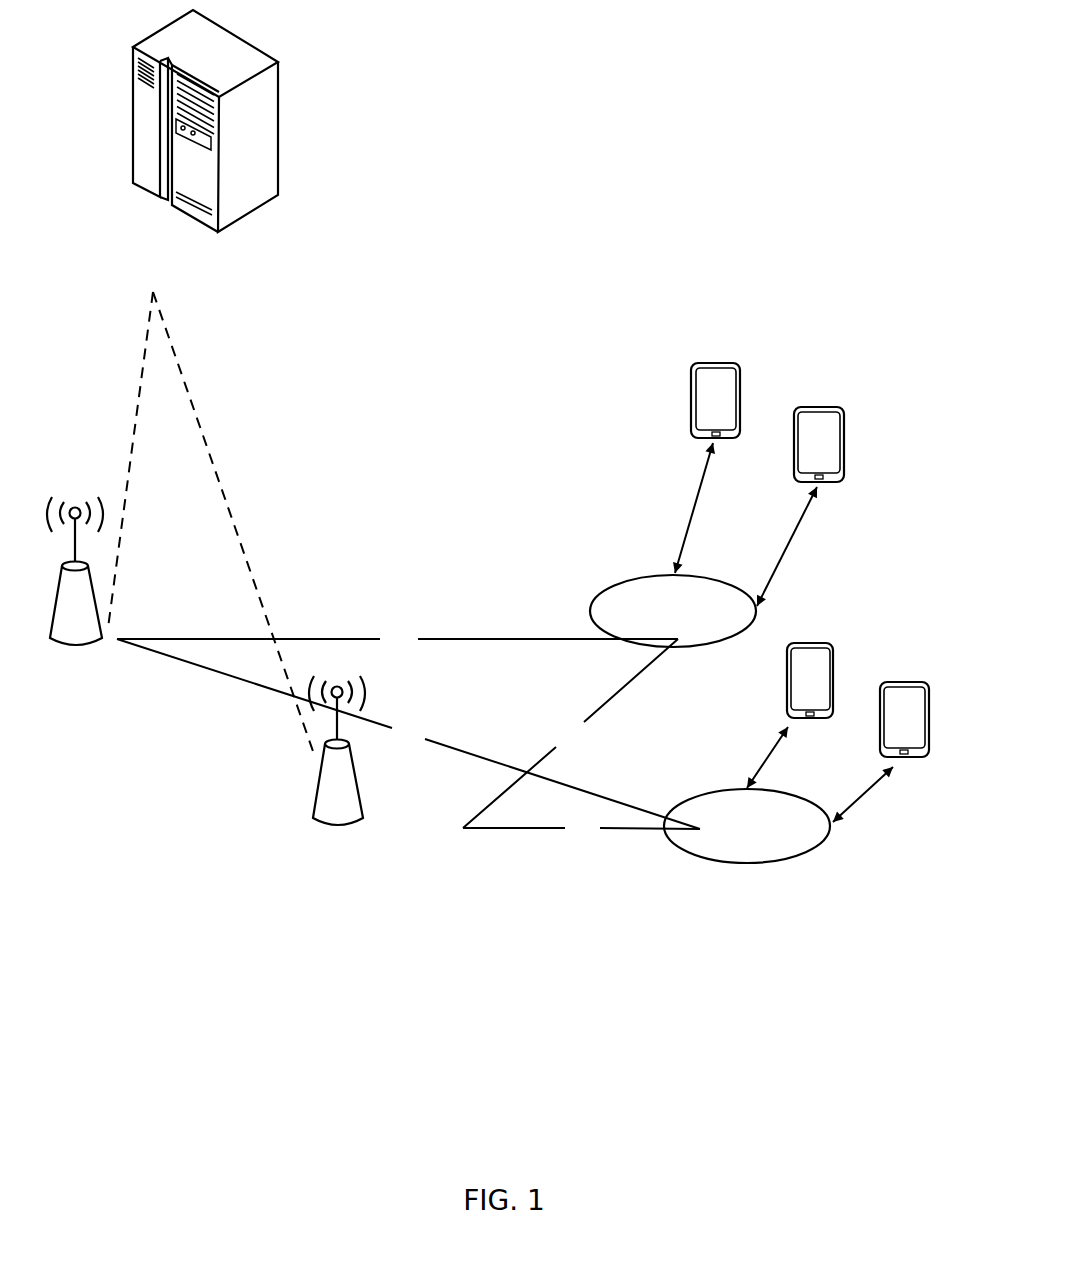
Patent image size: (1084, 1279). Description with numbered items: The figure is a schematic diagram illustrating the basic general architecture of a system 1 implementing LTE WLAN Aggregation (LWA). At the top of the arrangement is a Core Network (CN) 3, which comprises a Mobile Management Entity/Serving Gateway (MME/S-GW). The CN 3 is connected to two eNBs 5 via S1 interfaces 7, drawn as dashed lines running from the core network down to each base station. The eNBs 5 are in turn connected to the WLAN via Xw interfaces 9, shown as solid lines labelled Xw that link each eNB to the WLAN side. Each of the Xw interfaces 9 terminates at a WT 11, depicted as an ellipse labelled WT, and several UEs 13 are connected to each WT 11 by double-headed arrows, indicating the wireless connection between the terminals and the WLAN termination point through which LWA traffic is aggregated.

The system 1 is at (774, 256).
The Core Network 3 is at (278, 97).
The eNB 5 is at (68, 651).
The S1 interface 7 is at (141, 392).
The Xw interface 9 is at (183, 662).
The WT 11 is at (718, 578).
The UE 13 is at (718, 360).